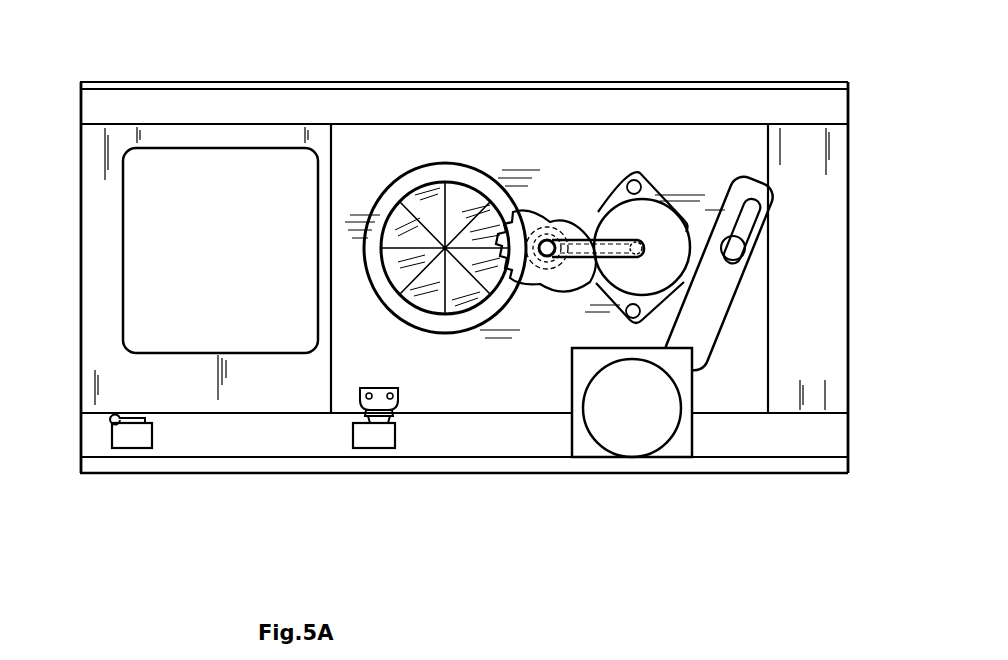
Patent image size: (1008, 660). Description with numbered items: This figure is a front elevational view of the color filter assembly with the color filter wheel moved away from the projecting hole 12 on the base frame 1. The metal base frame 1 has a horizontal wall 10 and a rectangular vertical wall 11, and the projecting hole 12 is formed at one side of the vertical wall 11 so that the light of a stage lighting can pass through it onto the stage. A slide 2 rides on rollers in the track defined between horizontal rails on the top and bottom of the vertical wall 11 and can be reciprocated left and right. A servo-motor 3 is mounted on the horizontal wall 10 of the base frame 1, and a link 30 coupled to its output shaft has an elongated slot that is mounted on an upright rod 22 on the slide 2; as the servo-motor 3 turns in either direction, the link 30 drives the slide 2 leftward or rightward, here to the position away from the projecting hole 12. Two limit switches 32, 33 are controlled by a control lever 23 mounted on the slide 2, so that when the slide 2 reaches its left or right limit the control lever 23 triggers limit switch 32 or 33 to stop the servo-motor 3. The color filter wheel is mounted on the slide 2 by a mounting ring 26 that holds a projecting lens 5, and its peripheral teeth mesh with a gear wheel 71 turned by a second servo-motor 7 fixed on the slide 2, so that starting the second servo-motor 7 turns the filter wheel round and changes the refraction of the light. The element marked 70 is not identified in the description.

The base frame 1 is at (489, 474).
The slide 2 is at (352, 146).
The servo-motor 3 is at (627, 445).
The projecting lens 5 is at (468, 200).
The second servo-motor 7 is at (672, 232).
The horizontal wall 10 is at (93, 447).
The vertical wall 11 is at (98, 160).
The projecting hole 12 is at (126, 243).
The upright rod 22 is at (740, 258).
The control lever 23 is at (380, 392).
The mounting ring 26 is at (447, 164).
The link 30 is at (778, 208).
The limit switch 32 is at (130, 442).
The limit switch 33 is at (378, 442).
The gear 70 is at (536, 285).
The gear wheel 71 is at (582, 234).